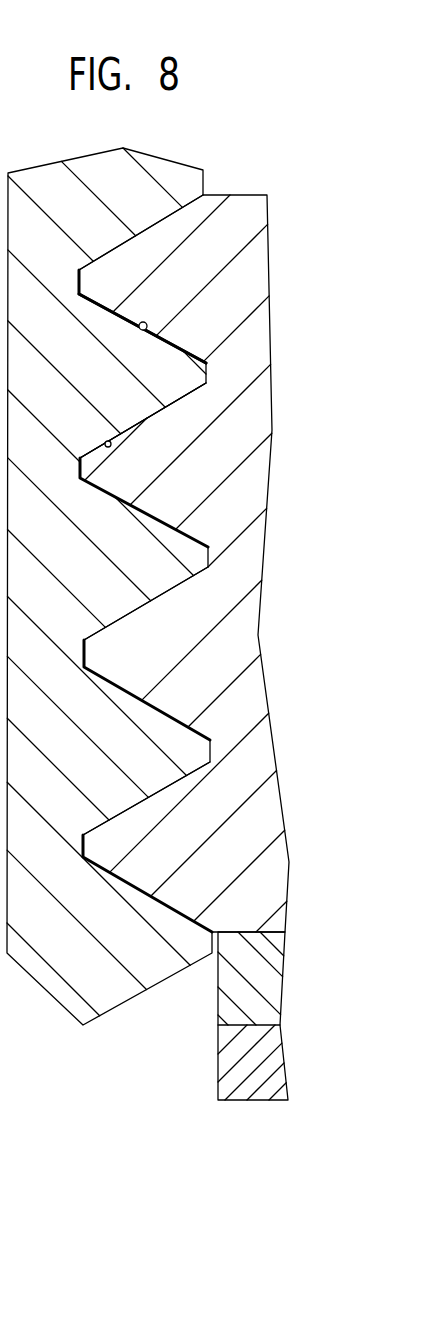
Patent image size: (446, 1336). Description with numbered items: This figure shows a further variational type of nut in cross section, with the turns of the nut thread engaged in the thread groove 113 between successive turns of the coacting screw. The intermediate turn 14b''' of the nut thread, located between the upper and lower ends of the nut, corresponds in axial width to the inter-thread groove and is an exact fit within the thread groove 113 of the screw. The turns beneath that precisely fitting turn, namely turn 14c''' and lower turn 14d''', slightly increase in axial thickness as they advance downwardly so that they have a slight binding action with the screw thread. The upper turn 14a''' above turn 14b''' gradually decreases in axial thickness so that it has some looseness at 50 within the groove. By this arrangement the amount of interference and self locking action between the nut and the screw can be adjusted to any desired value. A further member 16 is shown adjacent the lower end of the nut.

The upper turn of the nut thread 14a''' is at (145, 279).
The intermediate turn of the nut thread 14b''' is at (164, 465).
The turn of the nut thread 14c''' is at (147, 653).
The lower turn of the nut thread 14d''' is at (149, 847).
The looseness 50 is at (133, 327).
The groove 113 is at (107, 442).
The retaining member 16 is at (217, 1025).